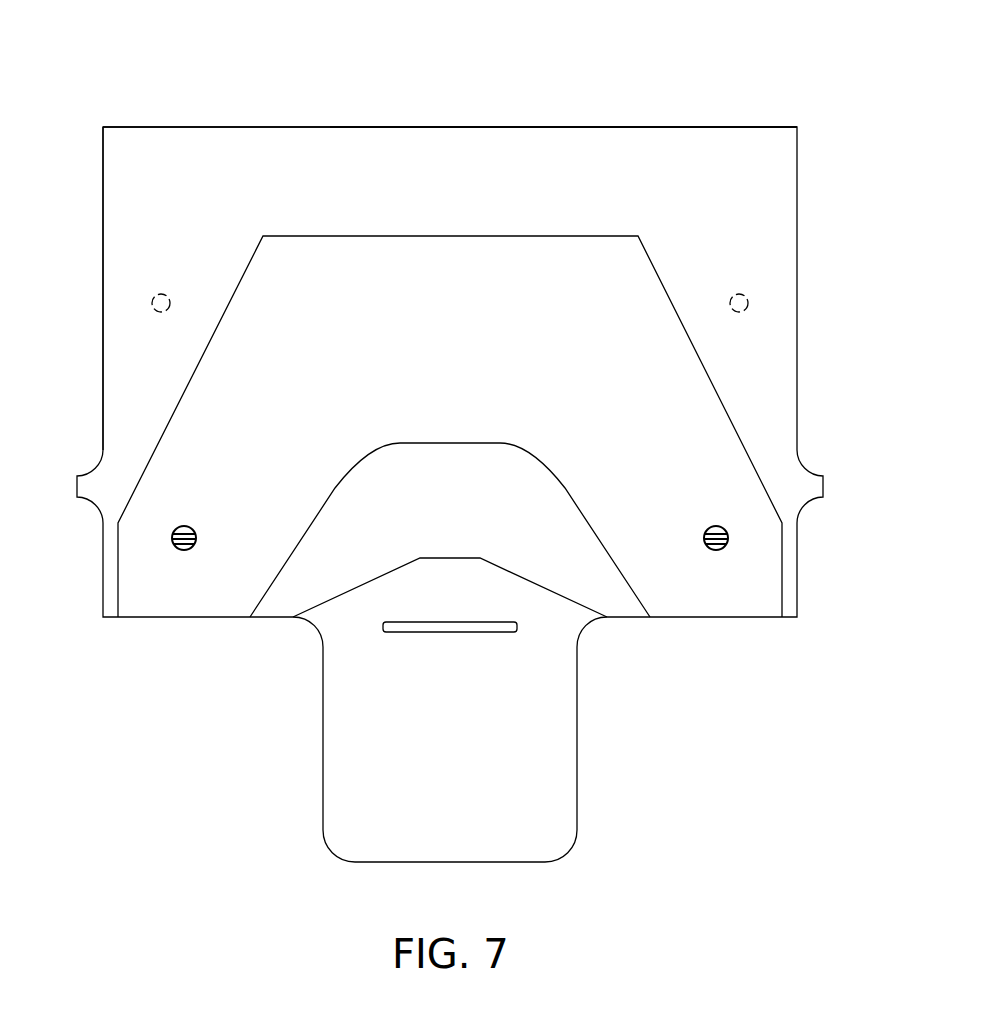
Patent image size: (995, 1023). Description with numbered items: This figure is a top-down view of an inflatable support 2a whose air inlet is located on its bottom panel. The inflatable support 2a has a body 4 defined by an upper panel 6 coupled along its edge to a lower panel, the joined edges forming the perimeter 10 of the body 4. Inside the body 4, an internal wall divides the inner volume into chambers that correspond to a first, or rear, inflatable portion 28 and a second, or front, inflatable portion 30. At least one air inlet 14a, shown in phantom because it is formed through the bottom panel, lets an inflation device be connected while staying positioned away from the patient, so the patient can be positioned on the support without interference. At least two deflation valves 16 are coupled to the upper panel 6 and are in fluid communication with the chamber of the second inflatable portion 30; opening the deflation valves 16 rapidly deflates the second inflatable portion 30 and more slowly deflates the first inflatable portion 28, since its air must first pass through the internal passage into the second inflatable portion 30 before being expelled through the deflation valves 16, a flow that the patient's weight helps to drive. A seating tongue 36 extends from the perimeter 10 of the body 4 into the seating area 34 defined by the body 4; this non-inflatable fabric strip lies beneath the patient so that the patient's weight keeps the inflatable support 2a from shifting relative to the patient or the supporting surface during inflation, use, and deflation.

The inflatable support 2a is at (686, 82).
The body 4 is at (247, 127).
The upper panel 6 is at (407, 140).
The first inflatable portion 28 is at (594, 137).
The perimeter 10 is at (103, 180).
The air inlet 14a is at (153, 307).
The deflation valves 16 is at (178, 533).
The second inflatable portion 30 is at (195, 592).
The seating area 34 is at (523, 585).
The seating tongue 36 is at (533, 797).